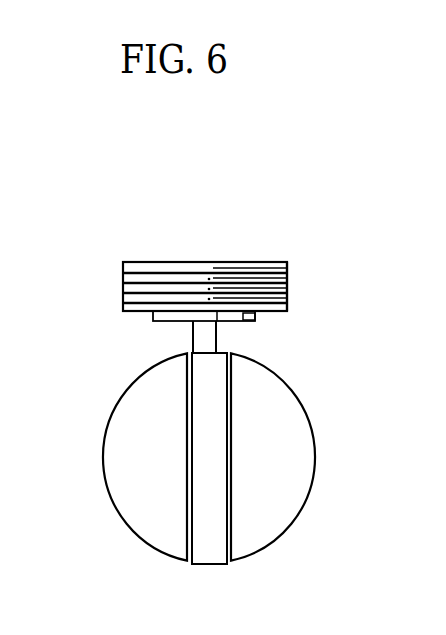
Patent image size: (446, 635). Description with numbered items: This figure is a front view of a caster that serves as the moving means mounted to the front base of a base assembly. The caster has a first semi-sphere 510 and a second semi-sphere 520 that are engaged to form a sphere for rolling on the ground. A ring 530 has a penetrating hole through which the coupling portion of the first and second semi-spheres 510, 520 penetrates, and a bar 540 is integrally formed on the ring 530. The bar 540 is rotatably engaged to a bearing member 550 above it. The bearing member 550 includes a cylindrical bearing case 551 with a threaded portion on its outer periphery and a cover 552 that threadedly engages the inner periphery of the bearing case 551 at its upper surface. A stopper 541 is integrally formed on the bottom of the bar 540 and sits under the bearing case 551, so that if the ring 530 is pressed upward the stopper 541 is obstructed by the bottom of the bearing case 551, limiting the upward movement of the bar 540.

The first semi-sphere 510 is at (153, 525).
The second semi-sphere 520 is at (272, 523).
The ring 530 is at (215, 553).
The bar 540 is at (193, 337).
The stopper 541 is at (243, 322).
The bearing member 550 is at (117, 290).
The bearing case 551 is at (287, 283).
The cover 552 is at (233, 262).